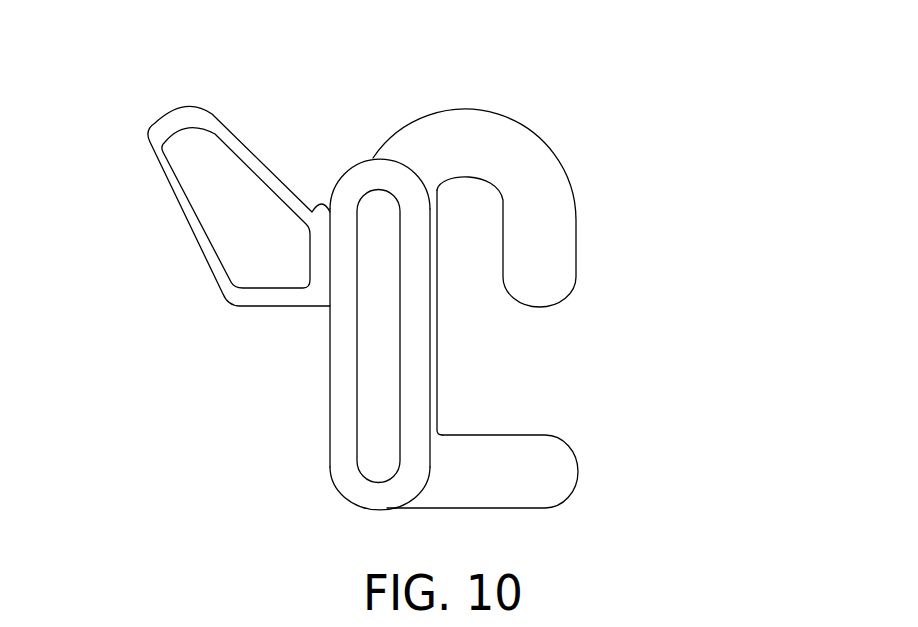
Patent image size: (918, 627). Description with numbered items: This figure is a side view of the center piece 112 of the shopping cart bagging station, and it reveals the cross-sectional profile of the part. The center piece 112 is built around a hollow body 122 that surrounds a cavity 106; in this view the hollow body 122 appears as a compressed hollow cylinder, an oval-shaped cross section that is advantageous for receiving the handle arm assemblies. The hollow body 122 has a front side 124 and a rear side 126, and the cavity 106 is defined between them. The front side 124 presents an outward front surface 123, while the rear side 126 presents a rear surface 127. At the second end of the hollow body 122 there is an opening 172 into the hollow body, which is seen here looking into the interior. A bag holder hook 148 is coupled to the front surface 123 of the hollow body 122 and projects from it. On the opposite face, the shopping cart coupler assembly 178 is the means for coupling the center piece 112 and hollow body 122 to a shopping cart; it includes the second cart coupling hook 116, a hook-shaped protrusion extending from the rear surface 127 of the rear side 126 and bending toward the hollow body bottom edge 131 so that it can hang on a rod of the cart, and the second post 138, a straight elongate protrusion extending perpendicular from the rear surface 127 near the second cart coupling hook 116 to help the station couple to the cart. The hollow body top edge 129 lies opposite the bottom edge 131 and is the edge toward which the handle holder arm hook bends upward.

The cavity 106 is at (383, 423).
The center piece 112 is at (340, 100).
The second cart coupling hook 116 is at (545, 173).
The hollow body 122 is at (342, 198).
The front surface 123 is at (330, 415).
The front side 124 is at (338, 384).
The rear side 126 is at (418, 315).
The rear surface 127 is at (433, 397).
The hollow body top edge 129 is at (370, 163).
The hollow body bottom edge 131 is at (380, 510).
The second post 138 is at (543, 475).
The bag holder hook 148 is at (158, 135).
The opening 172 is at (355, 357).
The shopping cart coupler assembly 178 is at (633, 213).